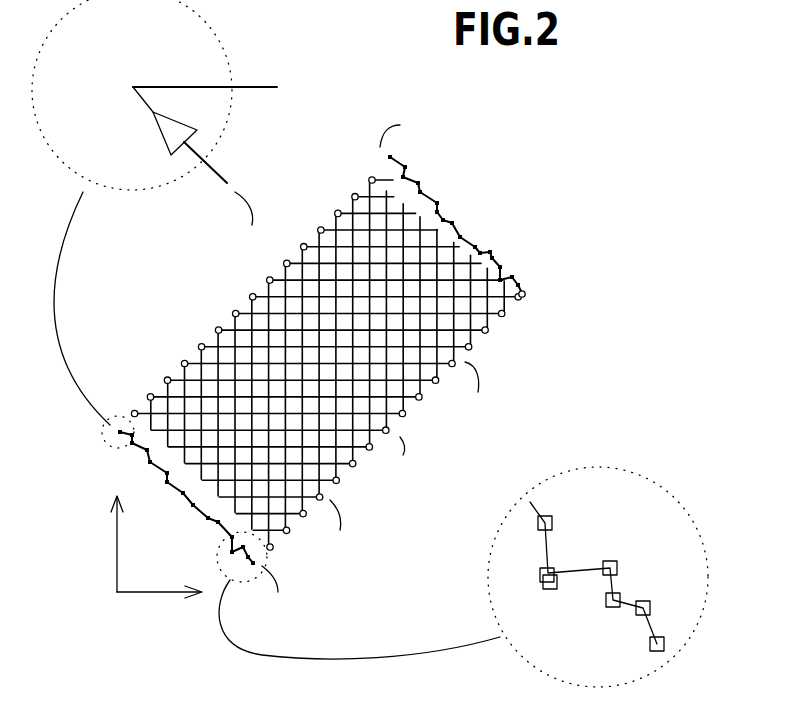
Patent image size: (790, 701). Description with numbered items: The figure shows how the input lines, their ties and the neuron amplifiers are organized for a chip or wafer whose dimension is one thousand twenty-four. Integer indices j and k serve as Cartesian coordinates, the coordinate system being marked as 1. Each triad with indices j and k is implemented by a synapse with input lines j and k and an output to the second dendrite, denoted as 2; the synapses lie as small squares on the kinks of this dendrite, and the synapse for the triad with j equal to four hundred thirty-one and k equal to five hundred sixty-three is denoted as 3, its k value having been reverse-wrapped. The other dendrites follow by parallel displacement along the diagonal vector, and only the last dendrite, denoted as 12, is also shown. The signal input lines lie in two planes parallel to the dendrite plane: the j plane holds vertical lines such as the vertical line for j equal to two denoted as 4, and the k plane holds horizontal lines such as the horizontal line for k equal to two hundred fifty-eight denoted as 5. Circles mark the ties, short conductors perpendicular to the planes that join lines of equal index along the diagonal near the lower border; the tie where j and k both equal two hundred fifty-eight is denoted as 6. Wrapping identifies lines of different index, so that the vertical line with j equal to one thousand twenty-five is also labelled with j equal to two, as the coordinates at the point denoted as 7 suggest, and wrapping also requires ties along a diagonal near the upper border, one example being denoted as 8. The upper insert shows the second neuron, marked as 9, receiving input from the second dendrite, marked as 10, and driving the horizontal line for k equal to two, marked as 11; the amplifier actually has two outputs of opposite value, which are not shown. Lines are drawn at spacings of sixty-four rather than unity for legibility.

The coordinate system 1 is at (105, 597).
The dendrite # 2 is at (155, 472).
The synapse 3 is at (548, 595).
The vertical line j=2 4 is at (384, 190).
The horizontal line k=258 5 is at (190, 358).
The tie at j=k=258 6 is at (465, 362).
The wrapping point 7 is at (398, 432).
The tie near the upper border 8 is at (320, 218).
The neuron #2 9 is at (160, 147).
The dendrite #2 input 10 is at (225, 170).
The horizontal line k=2 11 is at (212, 86).
The dendrite #1024 12 is at (472, 237).